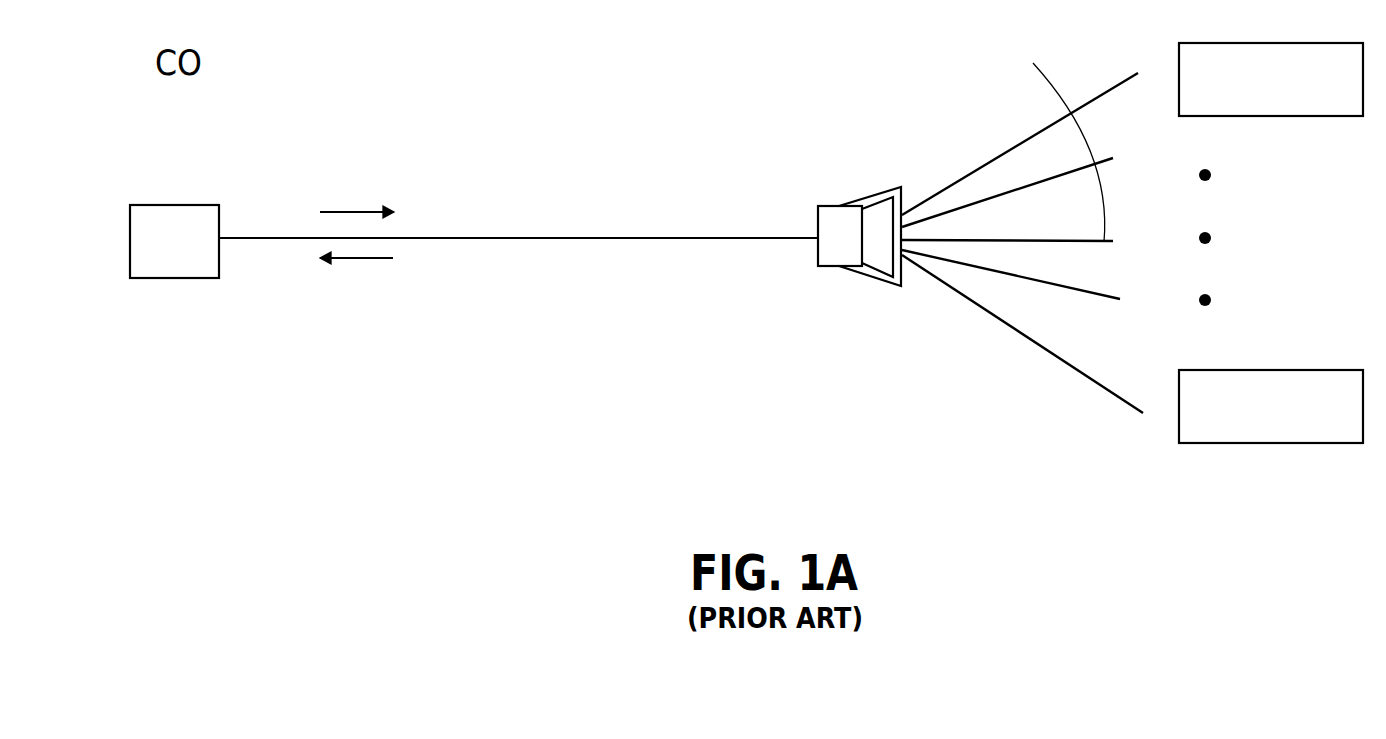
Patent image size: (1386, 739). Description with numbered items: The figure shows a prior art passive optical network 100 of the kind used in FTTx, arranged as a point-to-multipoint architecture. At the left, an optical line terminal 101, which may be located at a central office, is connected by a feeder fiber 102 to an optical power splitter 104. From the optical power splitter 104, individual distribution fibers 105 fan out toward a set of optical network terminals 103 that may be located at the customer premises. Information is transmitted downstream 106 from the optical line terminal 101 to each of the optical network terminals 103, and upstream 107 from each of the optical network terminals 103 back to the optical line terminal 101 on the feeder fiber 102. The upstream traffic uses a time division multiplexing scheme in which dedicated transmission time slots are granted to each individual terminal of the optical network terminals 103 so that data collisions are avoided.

The passive optical network 100 is at (328, 431).
The optical line terminal 101 is at (191, 258).
The feeder fiber 102 is at (558, 238).
The optical network terminals 103 is at (1286, 92).
The optical power splitter 104 is at (875, 212).
The individual distribution fibers 105 is at (1040, 130).
The downstream transmission 106 is at (357, 199).
The upstream transmission 107 is at (356, 269).